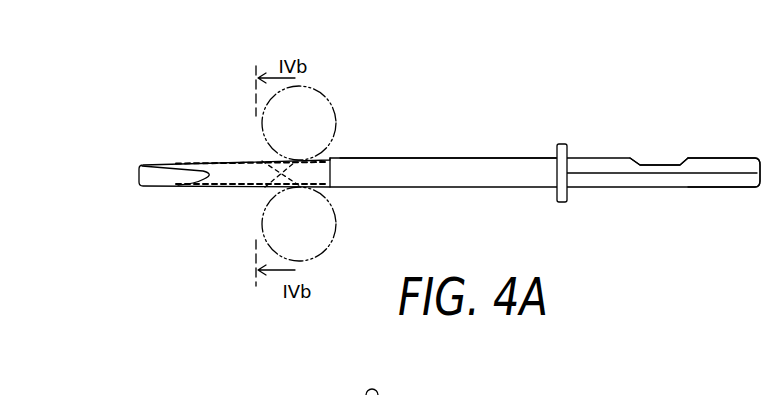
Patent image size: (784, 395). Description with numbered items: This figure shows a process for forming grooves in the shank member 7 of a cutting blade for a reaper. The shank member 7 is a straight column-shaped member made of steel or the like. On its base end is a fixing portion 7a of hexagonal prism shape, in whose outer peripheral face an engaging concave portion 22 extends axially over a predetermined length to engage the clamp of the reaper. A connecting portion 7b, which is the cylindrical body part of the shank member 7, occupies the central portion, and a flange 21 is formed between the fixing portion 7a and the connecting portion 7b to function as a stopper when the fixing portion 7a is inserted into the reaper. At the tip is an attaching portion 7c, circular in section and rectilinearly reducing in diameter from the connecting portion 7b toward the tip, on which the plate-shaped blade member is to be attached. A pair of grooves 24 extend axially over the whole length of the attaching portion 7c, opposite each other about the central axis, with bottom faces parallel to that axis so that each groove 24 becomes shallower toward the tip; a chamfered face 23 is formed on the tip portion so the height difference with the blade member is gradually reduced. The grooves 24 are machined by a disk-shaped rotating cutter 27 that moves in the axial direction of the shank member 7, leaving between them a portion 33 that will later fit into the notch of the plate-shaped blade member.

The shank member 7 is at (488, 157).
The fixing portion 7a is at (713, 157).
The connecting portion 7b is at (419, 158).
The attaching portion 7c is at (218, 163).
The flange 21 is at (563, 143).
The engaging concave portion 22 is at (655, 163).
The chamfered face 23 is at (163, 175).
The grooves 24 is at (265, 187).
The disk-shaped rotating cutter 27 is at (334, 109).
The portion situated between the grooves 33 is at (262, 161).